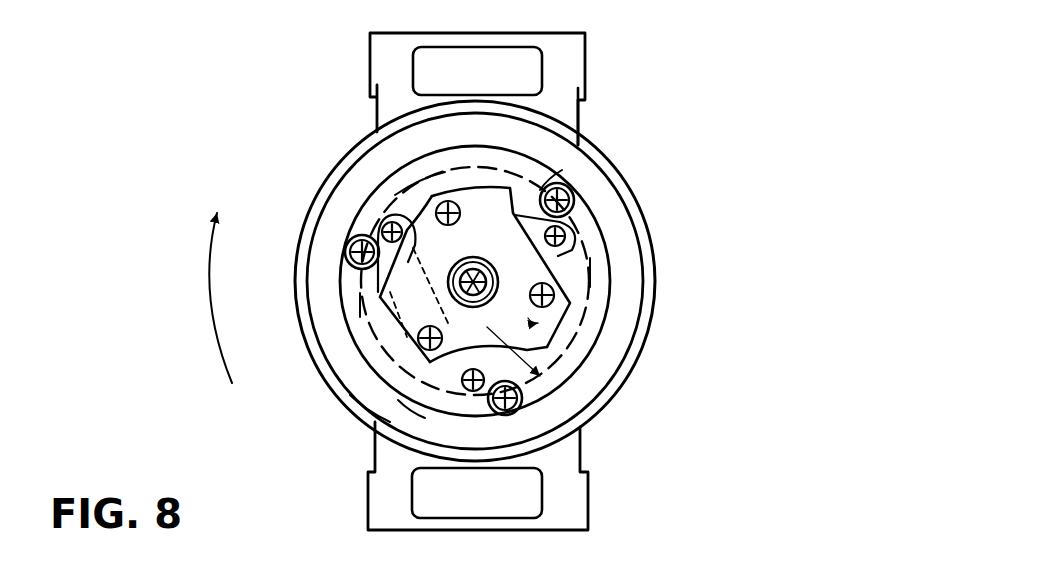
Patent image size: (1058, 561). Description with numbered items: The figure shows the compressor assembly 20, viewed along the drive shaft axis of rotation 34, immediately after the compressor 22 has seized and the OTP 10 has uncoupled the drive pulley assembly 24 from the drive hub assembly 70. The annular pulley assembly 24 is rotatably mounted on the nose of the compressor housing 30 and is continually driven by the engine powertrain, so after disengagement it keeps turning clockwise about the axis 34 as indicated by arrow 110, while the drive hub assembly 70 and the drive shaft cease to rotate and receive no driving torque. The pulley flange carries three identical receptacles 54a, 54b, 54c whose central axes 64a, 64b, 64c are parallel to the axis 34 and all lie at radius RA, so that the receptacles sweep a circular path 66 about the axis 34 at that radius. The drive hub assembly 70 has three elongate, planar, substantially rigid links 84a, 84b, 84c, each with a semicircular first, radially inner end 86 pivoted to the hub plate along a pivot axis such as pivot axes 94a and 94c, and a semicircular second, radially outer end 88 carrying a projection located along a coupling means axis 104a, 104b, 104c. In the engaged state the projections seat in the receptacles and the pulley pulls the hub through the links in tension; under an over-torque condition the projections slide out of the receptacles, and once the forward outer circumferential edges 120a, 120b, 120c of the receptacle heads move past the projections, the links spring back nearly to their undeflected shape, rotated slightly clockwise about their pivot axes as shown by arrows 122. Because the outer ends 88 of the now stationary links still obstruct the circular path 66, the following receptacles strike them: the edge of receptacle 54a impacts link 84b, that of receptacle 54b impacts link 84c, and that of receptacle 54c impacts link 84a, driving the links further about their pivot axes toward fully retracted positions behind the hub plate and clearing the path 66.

The OTP 10 is at (477, 156).
The compressor assembly 20 is at (658, 46).
The compressor 22 is at (362, 108).
The drive pulley assembly 24 is at (658, 322).
The compressor housing 30 is at (578, 126).
The axis of rotation 34 is at (483, 262).
The receptacle 54a is at (545, 362).
The receptacle 54b is at (608, 279).
The receptacle 54c is at (582, 212).
The central axis 64a is at (494, 416).
The central axis 64b is at (346, 259).
The central axis 64c is at (575, 209).
The circular path 66 is at (593, 265).
The drive hub assembly 70 is at (560, 370).
The link 84a is at (527, 227).
The link 84b is at (455, 372).
The link 84c is at (378, 298).
The first, radially inner end 86 is at (447, 323).
The second, radially outer end 88 is at (412, 250).
The pivot axis 94a is at (433, 182).
The pivot axis 94c is at (365, 405).
The coupling means axis 104a is at (578, 238).
The coupling means axis 104b is at (467, 392).
The coupling means axis 104c is at (385, 225).
The clockwise arrow 110 is at (208, 328).
The circumferential edge 120a is at (517, 405).
The circumferential edge 120b is at (348, 221).
The circumferential edge 120c is at (571, 188).
The arrows 122 is at (464, 212).
The radius RA is at (578, 432).